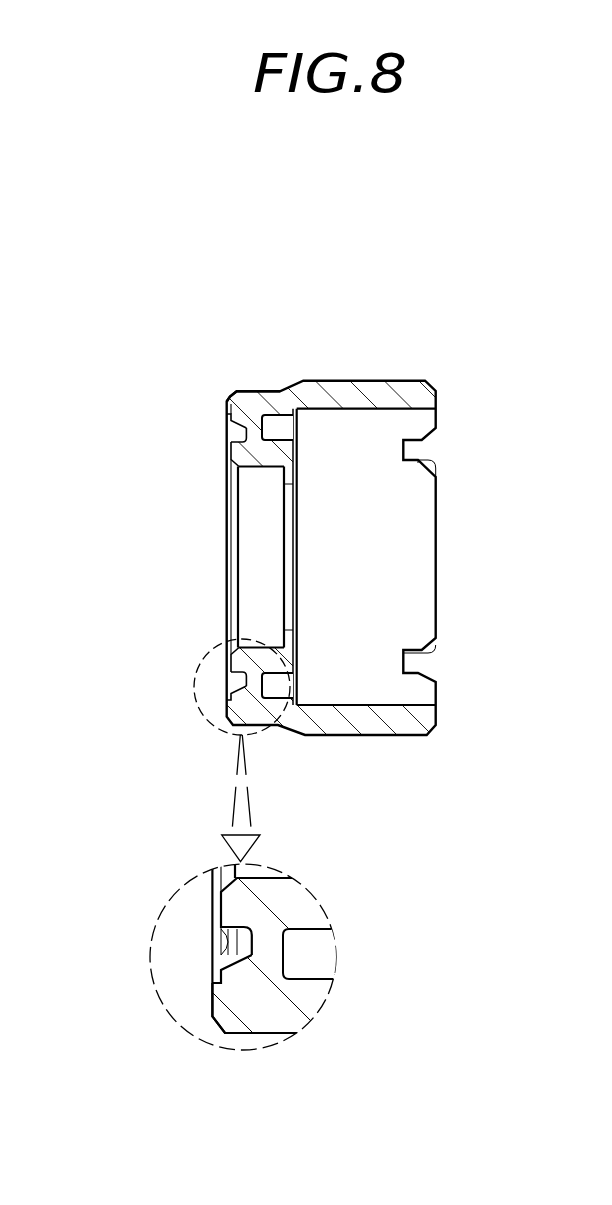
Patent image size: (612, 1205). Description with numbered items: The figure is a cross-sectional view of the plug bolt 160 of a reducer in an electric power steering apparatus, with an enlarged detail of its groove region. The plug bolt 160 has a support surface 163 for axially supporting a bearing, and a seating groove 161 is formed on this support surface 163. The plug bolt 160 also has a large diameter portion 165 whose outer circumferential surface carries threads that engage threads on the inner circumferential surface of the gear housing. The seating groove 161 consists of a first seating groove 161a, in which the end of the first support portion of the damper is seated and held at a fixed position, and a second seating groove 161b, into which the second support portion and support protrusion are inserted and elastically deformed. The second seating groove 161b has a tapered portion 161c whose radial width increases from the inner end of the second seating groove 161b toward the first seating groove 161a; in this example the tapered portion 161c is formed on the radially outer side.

The plug bolt 160 is at (161, 277).
The seating groove 161 is at (112, 435).
The first seating groove 161a is at (232, 420).
The second seating groove 161b is at (237, 441).
The tapered portion 161c is at (227, 957).
The support surface 163 is at (227, 402).
The large diameter portion 165 is at (375, 388).